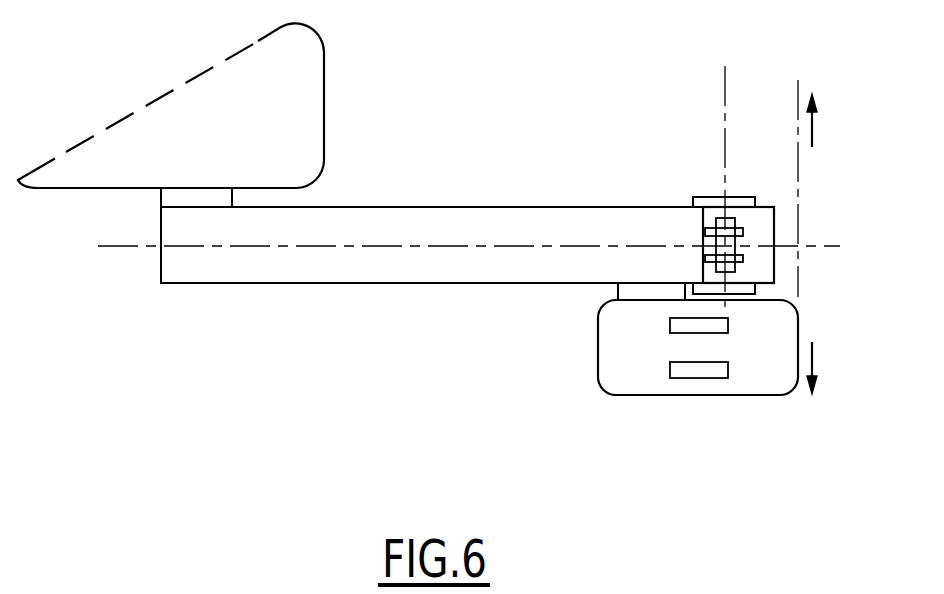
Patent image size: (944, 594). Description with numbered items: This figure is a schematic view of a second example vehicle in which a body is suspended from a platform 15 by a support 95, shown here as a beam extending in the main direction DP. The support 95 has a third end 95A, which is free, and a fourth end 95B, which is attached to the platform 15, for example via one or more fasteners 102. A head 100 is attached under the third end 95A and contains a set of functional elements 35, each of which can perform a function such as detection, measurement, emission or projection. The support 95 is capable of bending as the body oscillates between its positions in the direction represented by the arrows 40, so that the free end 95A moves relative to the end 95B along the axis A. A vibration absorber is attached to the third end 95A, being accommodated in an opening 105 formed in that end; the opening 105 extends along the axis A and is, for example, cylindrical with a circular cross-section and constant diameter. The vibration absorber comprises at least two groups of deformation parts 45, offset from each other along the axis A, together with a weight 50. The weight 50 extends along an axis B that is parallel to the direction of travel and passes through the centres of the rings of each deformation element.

The platform 15 is at (324, 68).
The fastener 102 is at (161, 197).
The support 95 is at (382, 262).
The third end 95A is at (795, 213).
The fourth end 95B is at (131, 282).
The main direction DP is at (122, 248).
The weight 50 is at (735, 222).
The opening 105 is at (702, 190).
The deformation part 45 is at (743, 271).
The arrows 40 is at (824, 244).
The head 100 is at (598, 364).
The functional elements 35 is at (690, 328).
The axis A is at (789, 178).
The axis B is at (716, 178).